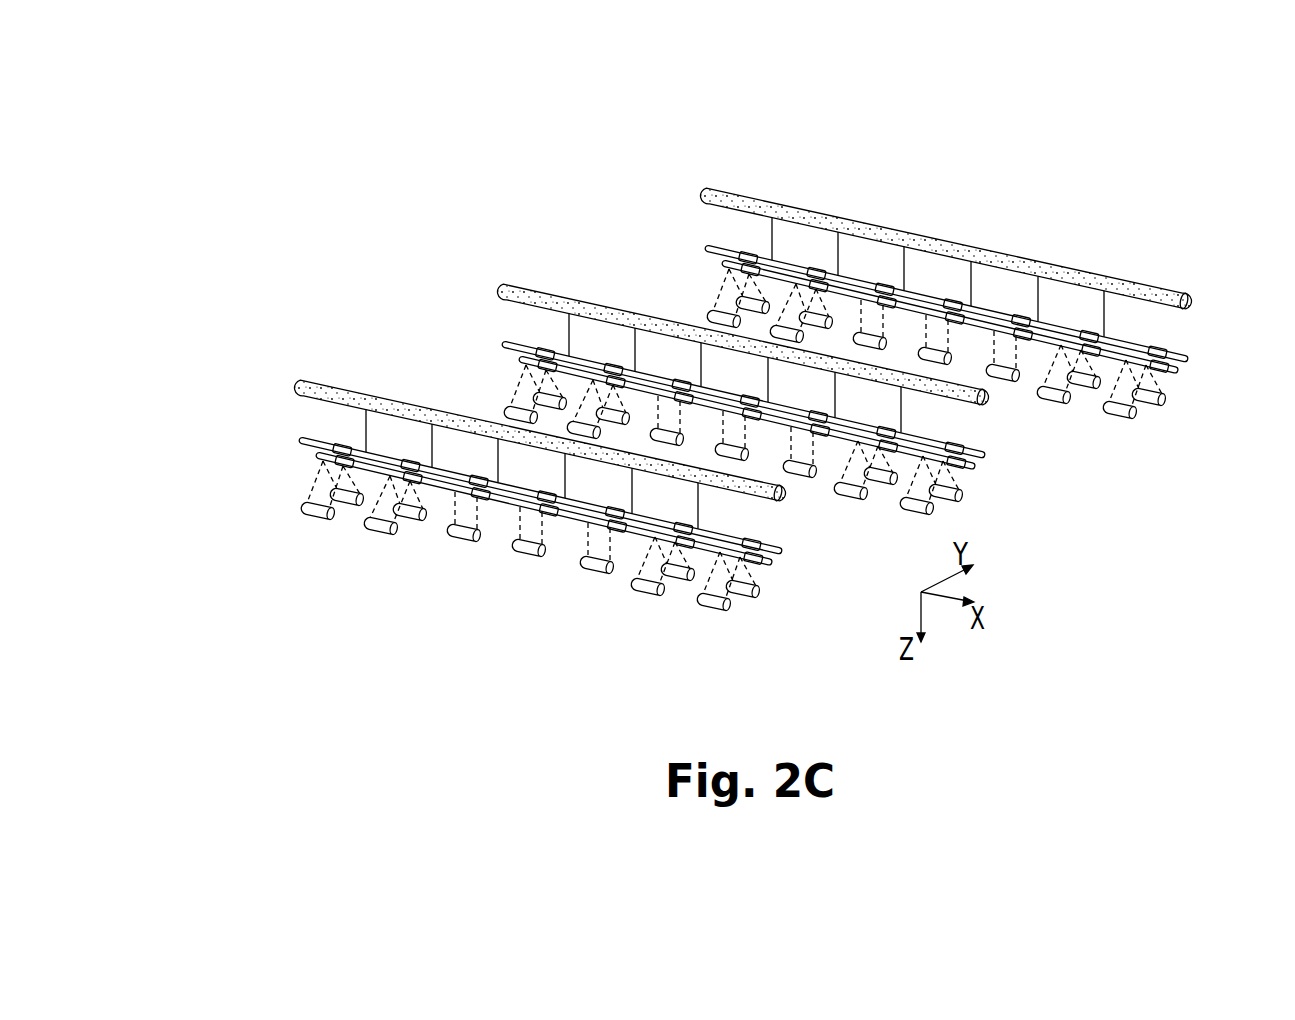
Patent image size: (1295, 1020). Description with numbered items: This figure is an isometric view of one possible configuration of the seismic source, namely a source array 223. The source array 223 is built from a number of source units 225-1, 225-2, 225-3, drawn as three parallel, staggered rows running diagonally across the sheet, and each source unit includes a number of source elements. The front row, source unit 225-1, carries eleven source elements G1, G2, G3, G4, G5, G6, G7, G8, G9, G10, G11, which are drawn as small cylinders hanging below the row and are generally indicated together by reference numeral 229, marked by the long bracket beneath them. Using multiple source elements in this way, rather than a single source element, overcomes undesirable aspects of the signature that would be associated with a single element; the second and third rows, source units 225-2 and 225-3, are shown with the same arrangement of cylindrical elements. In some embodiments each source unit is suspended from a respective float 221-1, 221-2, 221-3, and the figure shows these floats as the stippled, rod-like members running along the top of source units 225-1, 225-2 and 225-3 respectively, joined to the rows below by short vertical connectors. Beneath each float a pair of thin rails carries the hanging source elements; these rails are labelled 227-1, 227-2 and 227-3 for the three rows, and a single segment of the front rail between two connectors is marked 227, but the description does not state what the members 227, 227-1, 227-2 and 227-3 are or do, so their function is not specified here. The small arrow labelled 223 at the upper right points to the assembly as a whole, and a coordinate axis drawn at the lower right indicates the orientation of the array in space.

The float 221-1 is at (362, 385).
The float 221-2 is at (568, 292).
The float 221-3 is at (772, 200).
The source array 223 is at (1066, 180).
The source unit 225-1 is at (787, 540).
The source unit 225-2 is at (993, 443).
The source unit 225-3 is at (1198, 295).
The unit cell 227 is at (532, 469).
The rail 227-1 is at (300, 437).
The rail 227-2 is at (503, 341).
The rail 227-3 is at (706, 245).
The source elements 229 is at (726, 704).
The source element G1 is at (316, 520).
The source element G2 is at (346, 506).
The source element G3 is at (380, 535).
The source element G4 is at (410, 521).
The source element G5 is at (463, 542).
The source element G6 is at (528, 557).
The source element G7 is at (596, 574).
The source element G8 is at (647, 596).
The source element G9 is at (677, 581).
The source element G10 is at (713, 611).
The source element G11 is at (742, 598).